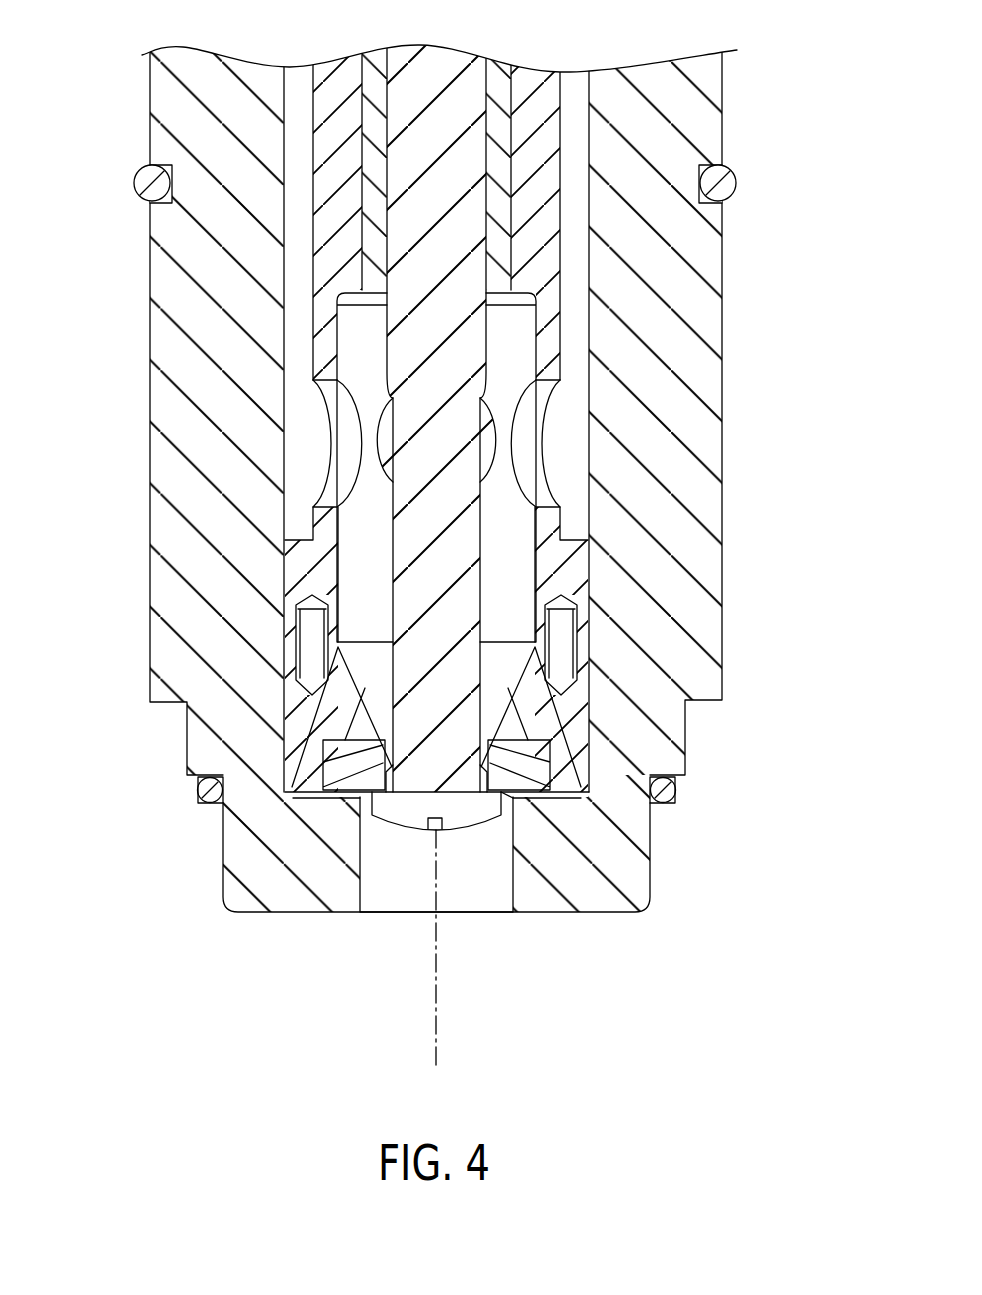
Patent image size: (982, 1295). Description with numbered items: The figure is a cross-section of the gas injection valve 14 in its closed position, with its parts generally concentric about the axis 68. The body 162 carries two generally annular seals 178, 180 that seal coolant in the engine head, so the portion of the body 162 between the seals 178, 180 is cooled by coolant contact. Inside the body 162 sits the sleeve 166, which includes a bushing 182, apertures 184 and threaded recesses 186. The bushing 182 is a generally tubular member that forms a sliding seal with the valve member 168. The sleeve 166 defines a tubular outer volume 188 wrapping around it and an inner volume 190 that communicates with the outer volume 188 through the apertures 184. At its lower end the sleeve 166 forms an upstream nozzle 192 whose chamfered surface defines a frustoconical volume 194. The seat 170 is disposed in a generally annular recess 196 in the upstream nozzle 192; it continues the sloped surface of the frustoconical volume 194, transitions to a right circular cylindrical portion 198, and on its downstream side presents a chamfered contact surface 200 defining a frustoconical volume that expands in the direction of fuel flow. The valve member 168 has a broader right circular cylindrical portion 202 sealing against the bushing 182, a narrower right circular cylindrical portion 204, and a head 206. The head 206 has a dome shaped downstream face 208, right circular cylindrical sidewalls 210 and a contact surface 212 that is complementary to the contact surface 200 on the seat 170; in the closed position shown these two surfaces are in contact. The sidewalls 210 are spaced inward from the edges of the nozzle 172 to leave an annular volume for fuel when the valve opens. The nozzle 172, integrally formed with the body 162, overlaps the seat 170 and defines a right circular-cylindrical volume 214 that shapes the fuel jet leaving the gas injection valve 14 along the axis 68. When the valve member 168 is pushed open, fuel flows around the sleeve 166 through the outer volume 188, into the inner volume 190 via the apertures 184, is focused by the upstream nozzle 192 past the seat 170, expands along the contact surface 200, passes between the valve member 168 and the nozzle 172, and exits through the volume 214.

The gas injection valve 14 is at (90, 1078).
The axis 68 is at (432, 1025).
The body 162 is at (722, 85).
The sleeve 166 is at (305, 233).
The valve member 168 is at (482, 445).
The seat 170 is at (502, 717).
The nozzle 172 is at (505, 912).
The seal 178 is at (738, 187).
The seal 180 is at (672, 797).
The bushing 182 is at (362, 113).
The apertures 184 is at (343, 452).
The threaded recesses 186 is at (330, 618).
The outer volume 188 is at (575, 273).
The inner volume 190 is at (388, 519).
The upstream nozzle 192 is at (303, 718).
The frustoconical volume 194 is at (390, 669).
The annular recess 196 is at (320, 763).
The right circular cylindrical portion 198 is at (353, 797).
The contact surface 200 is at (480, 780).
The broader right circular cylindrical portion 202 is at (363, 253).
The narrower right circular cylindrical portion 204 is at (508, 467).
The head 206 is at (390, 833).
The downstream face 208 is at (446, 830).
The sidewalls 210 is at (512, 805).
The contact surface 212 is at (460, 782).
The right circular-cylindrical volume 214 is at (431, 901).